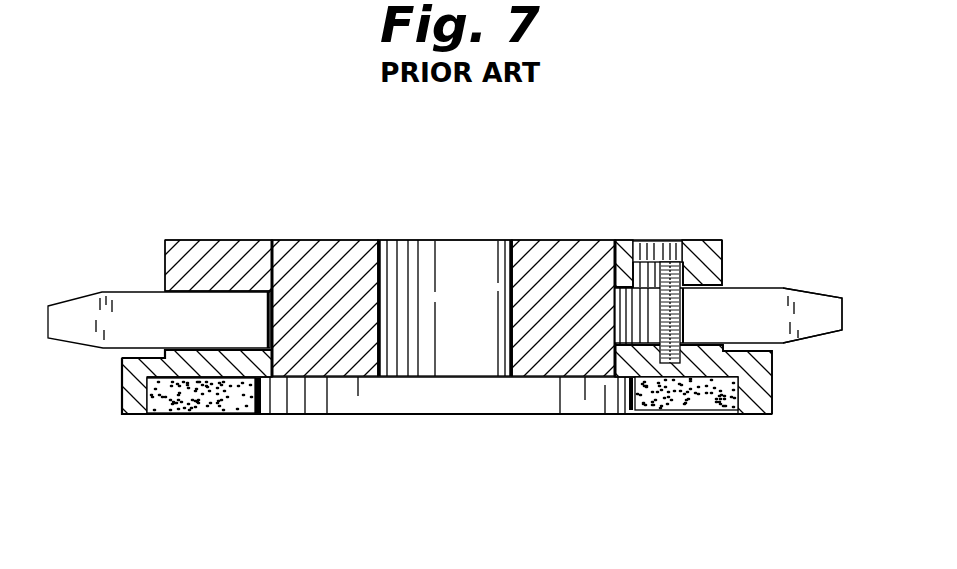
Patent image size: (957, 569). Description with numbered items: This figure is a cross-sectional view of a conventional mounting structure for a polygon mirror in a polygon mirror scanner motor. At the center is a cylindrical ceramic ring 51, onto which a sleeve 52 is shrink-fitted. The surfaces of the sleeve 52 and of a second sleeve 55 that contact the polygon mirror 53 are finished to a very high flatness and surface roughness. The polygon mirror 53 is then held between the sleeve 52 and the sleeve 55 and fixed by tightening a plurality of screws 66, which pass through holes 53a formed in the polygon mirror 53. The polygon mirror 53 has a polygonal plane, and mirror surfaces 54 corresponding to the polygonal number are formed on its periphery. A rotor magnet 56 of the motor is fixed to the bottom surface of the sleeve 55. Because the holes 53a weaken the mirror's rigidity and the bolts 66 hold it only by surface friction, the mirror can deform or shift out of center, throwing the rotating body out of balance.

The cylindrical ceramic ring 51 is at (300, 252).
The sleeve 52 is at (708, 240).
The polygon mirror 53 is at (780, 290).
The holes 53a is at (657, 262).
The mirror surfaces 54 is at (852, 326).
The sleeve 55 is at (756, 388).
The rotor magnet 56 is at (213, 402).
The screws 66 is at (646, 240).